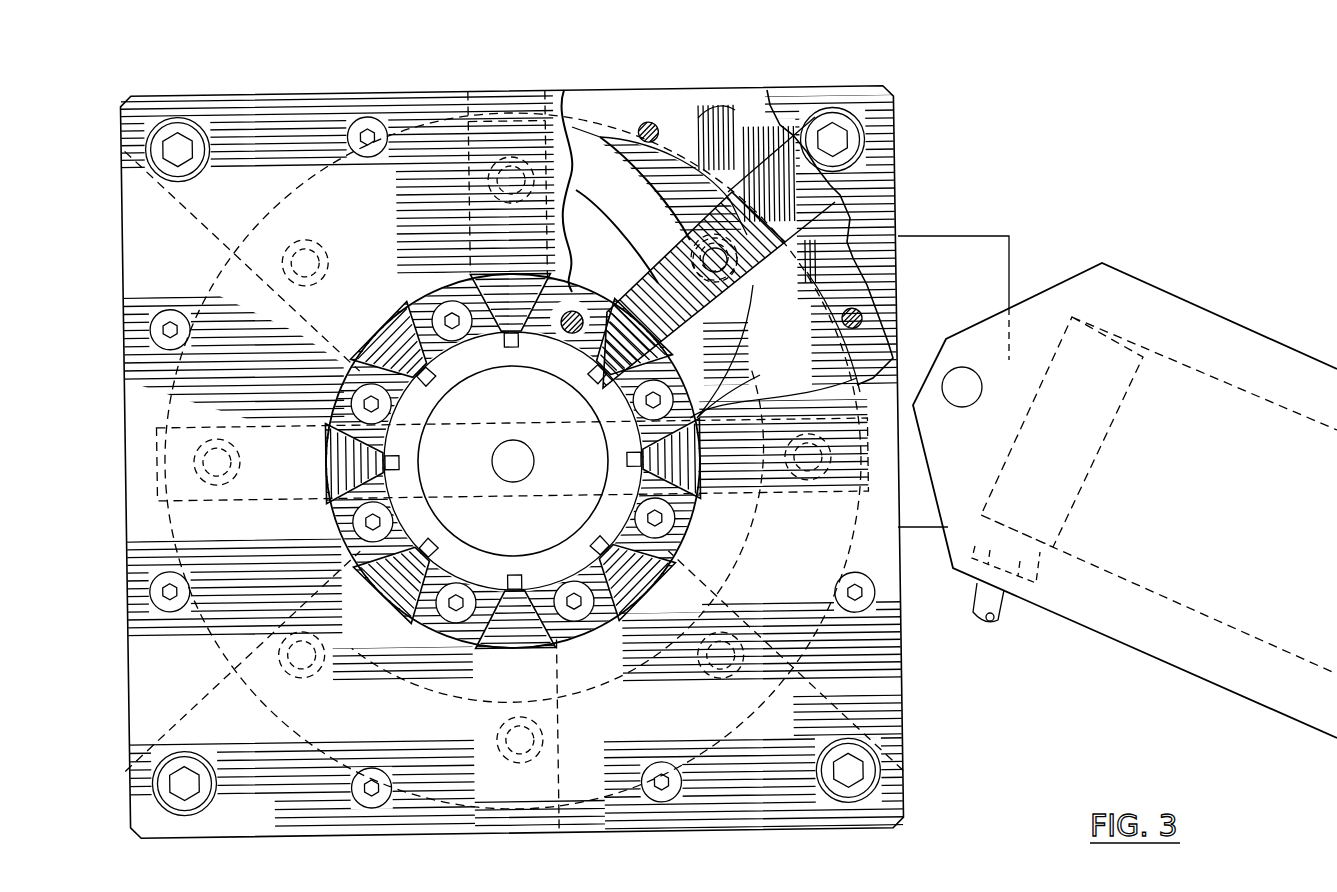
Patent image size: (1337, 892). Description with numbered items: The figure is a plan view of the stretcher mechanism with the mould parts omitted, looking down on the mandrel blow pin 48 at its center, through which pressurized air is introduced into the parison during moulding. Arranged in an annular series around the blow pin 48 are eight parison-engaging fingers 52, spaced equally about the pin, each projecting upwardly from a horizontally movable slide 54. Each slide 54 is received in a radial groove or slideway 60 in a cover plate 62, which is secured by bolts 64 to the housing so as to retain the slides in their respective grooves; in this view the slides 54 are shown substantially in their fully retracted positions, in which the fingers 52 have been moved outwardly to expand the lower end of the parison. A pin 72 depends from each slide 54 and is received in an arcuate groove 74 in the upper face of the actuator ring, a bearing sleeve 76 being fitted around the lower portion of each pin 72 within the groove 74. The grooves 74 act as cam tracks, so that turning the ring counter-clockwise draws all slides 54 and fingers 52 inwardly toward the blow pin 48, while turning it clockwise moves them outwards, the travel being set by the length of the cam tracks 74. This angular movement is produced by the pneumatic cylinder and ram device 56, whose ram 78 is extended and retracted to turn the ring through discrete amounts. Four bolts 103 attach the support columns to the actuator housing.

The blow pin 48 is at (522, 466).
The fingers 52 is at (391, 456).
The slide 54 is at (556, 705).
The pneumatic cylinder and ram device 56 is at (1220, 376).
The radial groove or slideway 60 is at (560, 812).
The cover plate 62 is at (895, 690).
The bolts 64 is at (388, 126).
The pin 72 is at (714, 272).
The arcuate groove 74 is at (388, 245).
The bearing sleeve 76 is at (518, 750).
The ram 78 is at (922, 340).
The bolts 103 is at (200, 158).